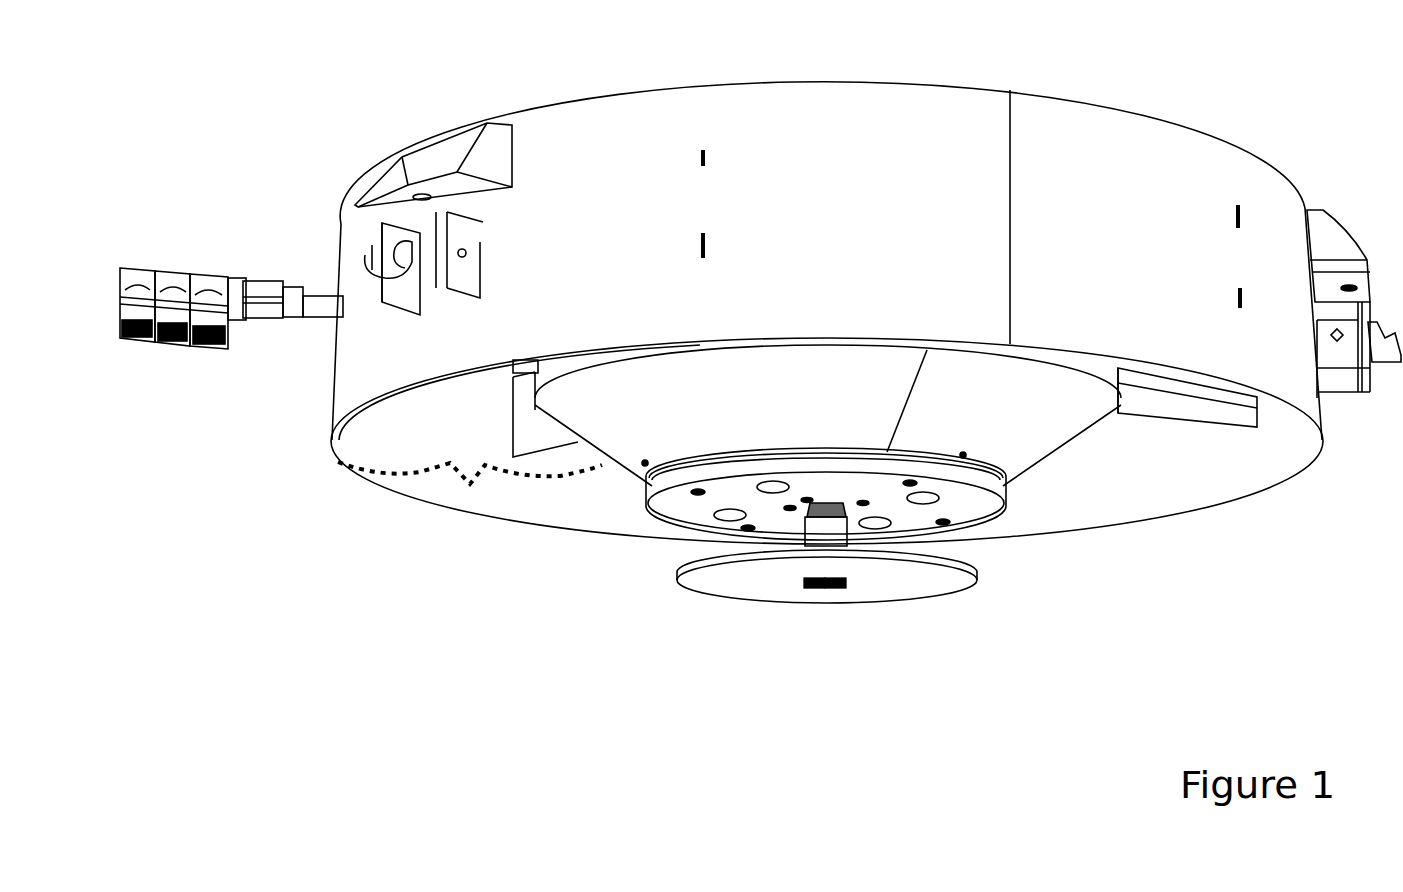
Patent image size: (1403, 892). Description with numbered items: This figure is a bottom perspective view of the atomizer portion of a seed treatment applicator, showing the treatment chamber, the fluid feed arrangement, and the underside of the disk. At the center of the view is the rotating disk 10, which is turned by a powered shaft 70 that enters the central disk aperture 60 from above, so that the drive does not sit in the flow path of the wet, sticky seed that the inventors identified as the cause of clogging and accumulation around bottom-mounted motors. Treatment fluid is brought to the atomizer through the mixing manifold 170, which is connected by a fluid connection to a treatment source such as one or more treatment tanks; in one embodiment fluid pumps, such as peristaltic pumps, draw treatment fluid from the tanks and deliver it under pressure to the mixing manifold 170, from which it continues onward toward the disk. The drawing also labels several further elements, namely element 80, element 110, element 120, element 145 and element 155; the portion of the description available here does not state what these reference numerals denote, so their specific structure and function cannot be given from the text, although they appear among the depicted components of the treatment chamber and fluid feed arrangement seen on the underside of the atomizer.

The rotating disk 10 is at (750, 606).
The central disk aperture 60 is at (809, 593).
The powered shaft 70 is at (840, 594).
The holes 80 is at (866, 498).
The plate 110 is at (1010, 500).
The fitting 120 is at (318, 322).
The cable path 145 is at (470, 487).
The bracket 155 is at (340, 220).
The mixing manifold 170 is at (198, 362).